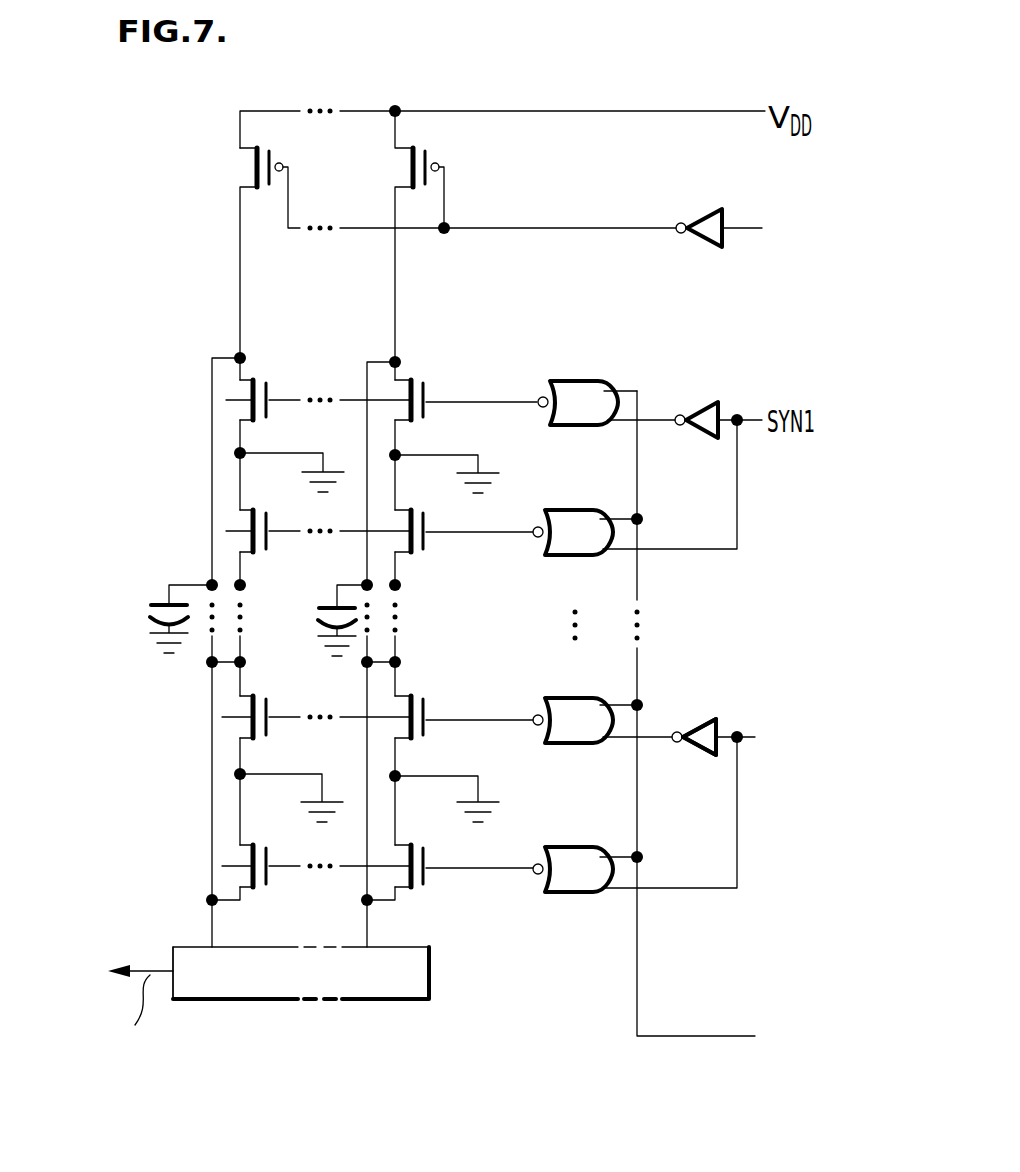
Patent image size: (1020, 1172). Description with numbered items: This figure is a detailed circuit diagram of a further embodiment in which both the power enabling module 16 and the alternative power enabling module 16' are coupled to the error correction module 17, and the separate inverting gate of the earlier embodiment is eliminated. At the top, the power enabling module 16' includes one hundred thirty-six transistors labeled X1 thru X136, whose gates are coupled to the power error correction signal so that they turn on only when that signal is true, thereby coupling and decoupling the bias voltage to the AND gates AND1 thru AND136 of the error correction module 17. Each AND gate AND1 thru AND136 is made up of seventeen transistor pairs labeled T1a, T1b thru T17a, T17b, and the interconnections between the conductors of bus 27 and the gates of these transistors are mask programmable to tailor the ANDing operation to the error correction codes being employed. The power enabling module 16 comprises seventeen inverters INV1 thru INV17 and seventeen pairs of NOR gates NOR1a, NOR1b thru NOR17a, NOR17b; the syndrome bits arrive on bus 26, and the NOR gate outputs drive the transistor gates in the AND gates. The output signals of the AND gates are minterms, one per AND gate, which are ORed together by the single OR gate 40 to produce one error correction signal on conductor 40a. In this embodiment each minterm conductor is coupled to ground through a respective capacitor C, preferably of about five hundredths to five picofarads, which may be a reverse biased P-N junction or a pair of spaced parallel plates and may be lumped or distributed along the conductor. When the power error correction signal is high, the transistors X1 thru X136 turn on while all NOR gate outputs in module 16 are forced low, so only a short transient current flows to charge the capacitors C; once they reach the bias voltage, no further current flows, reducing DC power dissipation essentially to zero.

The power enabling module 16 is at (697, 751).
The power enabling module 16' is at (505, 245).
The error correction module 17 is at (394, 1032).
The bus 26 is at (790, 798).
The bus 27 is at (489, 896).
The OR gate 40 is at (430, 985).
The conductor 40a is at (142, 968).
The transistor X136 is at (246, 166).
The transistor X1 is at (400, 166).
The AND gate AND136 is at (178, 342).
The AND gate AND1 is at (355, 355).
The transistor T1a is at (262, 378).
The transistor T1b is at (260, 556).
The transistor T17a is at (260, 694).
The transistor T17b is at (258, 843).
The capacitor C is at (150, 612).
The NOR gate NOR1a is at (577, 382).
The NOR gate NOR1b is at (573, 510).
The NOR gate NOR17a is at (575, 698).
The NOR gate NOR17b is at (575, 847).
The inverter INV1 is at (704, 402).
The inverter INV17 is at (704, 719).